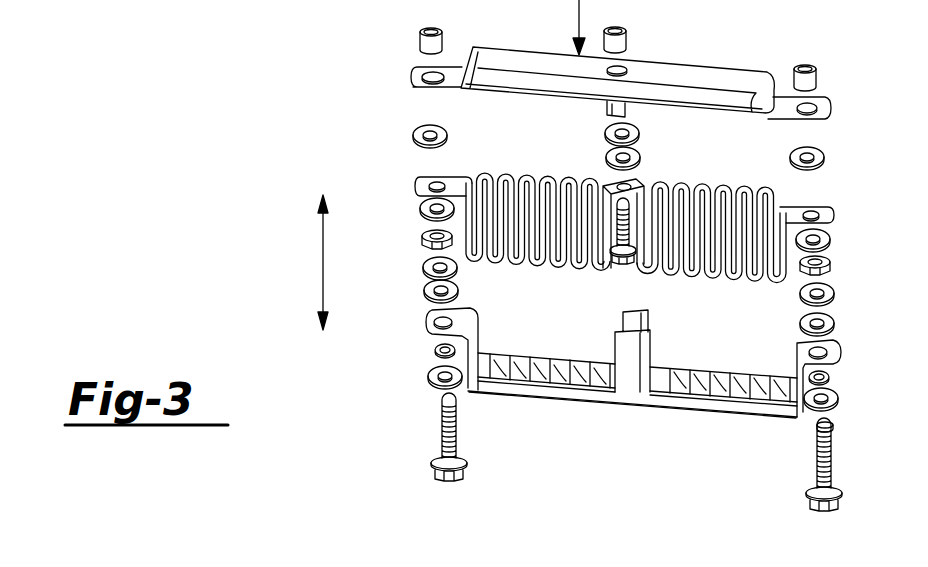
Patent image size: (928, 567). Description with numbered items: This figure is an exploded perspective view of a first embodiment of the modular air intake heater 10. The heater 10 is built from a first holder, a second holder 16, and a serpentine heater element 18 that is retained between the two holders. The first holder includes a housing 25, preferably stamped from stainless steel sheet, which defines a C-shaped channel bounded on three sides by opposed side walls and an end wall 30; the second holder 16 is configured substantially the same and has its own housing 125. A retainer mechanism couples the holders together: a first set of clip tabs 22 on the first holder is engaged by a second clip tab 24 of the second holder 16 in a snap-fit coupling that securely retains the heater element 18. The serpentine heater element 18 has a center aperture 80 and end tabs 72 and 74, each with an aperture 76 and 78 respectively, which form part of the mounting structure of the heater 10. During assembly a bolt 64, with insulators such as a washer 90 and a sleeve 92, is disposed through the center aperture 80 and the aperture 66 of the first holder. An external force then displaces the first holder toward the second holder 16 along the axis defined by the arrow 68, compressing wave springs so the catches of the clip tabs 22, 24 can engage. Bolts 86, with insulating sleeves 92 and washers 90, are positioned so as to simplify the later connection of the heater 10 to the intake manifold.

The modular heater 10 is at (150, 3).
The second holder 16 is at (466, 25).
The serpentine heater element 18 is at (68, 0).
The first set of clip tabs 22 is at (607, 107).
The second clip tab 24 is at (628, 375).
The housing 25 is at (742, 68).
The end wall 30 is at (520, 65).
The bolt 64 is at (607, 288).
The aperture 66 is at (620, 68).
The arrow 68 is at (323, 258).
The end tab 72 is at (830, 212).
The end tab 74 is at (422, 187).
The aperture 76 is at (833, 232).
The aperture 78 is at (420, 207).
The center aperture 80 is at (642, 172).
The bolts 86 is at (450, 477).
The washer 90 is at (418, 133).
The sleeve 92 is at (420, 42).
The housing 125 is at (677, 406).